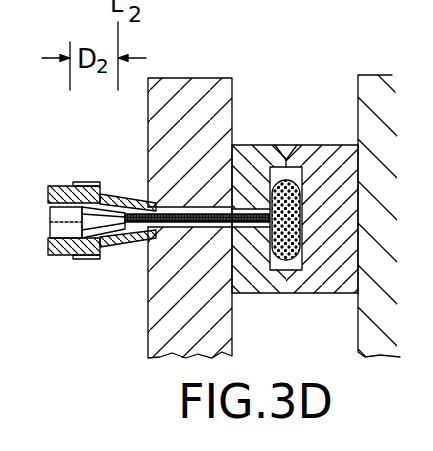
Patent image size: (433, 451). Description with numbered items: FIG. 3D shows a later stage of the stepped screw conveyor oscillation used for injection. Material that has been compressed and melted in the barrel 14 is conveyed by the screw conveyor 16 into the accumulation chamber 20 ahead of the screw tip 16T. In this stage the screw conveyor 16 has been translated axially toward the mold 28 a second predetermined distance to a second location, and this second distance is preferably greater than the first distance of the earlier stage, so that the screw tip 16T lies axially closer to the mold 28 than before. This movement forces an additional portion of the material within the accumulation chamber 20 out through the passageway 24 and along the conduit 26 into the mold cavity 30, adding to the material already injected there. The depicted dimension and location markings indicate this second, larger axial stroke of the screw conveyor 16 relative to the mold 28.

The barrel 14 is at (76, 184).
The screw conveyor 16 is at (50, 222).
The screw tip 16T is at (110, 190).
The accumulation chamber 20 is at (128, 243).
The passageway 24 is at (177, 231).
The conduit 26 is at (270, 222).
The mold 28 is at (295, 215).
The mold cavity 30 is at (302, 268).